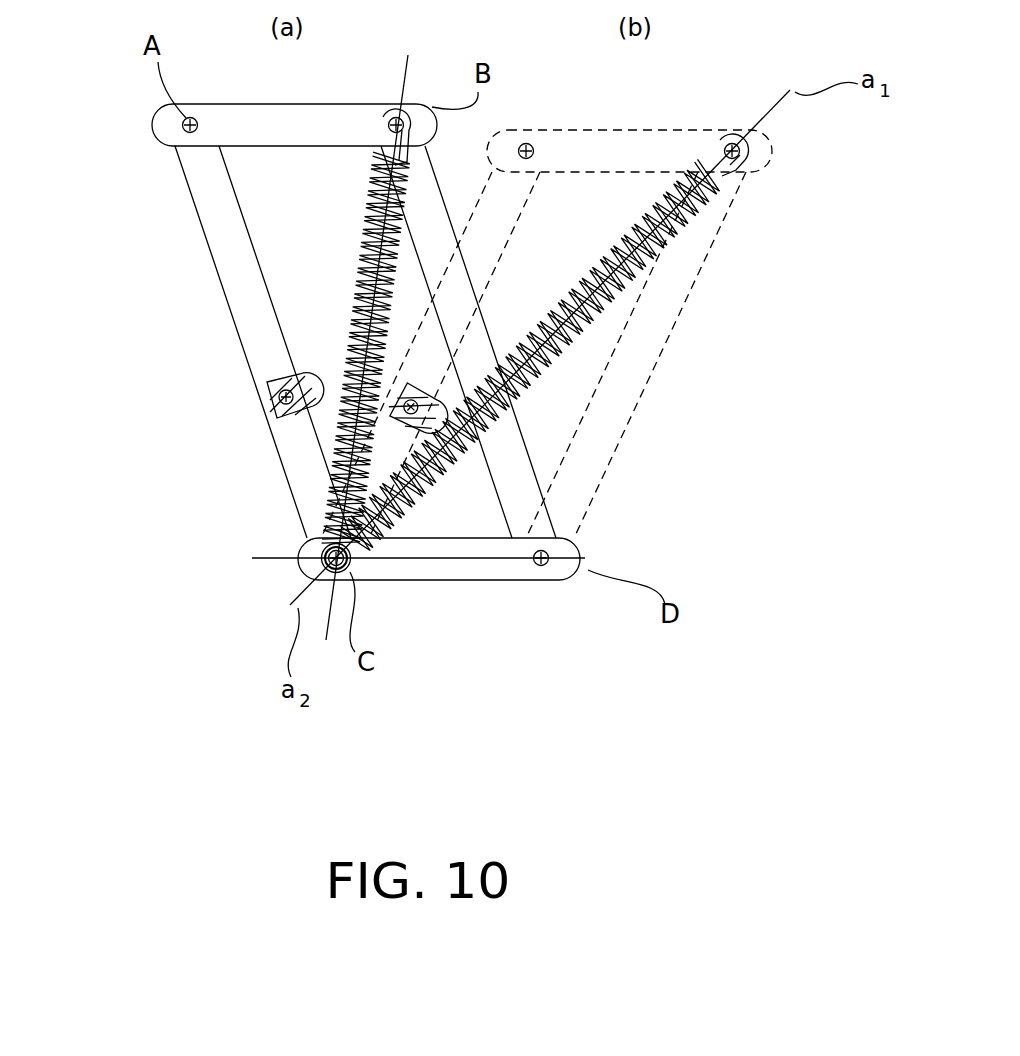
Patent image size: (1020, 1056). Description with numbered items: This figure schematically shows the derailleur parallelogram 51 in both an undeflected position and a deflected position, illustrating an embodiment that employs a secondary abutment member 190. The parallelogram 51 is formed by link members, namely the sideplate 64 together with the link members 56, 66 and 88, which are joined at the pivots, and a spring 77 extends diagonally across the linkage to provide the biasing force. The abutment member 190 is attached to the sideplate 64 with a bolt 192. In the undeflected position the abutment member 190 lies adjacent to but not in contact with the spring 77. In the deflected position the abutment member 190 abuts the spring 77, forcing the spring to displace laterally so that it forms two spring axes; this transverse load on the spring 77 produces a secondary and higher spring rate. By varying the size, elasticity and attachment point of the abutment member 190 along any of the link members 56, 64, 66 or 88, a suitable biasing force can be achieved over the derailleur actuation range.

The parallelogram 51 is at (200, 303).
The link member 56 is at (455, 575).
The sideplate 64 is at (218, 233).
The link member 66 is at (545, 500).
The spring 77 is at (358, 240).
The link member 88 is at (297, 116).
The abutment member 190 is at (322, 365).
The bolt 192 is at (278, 401).